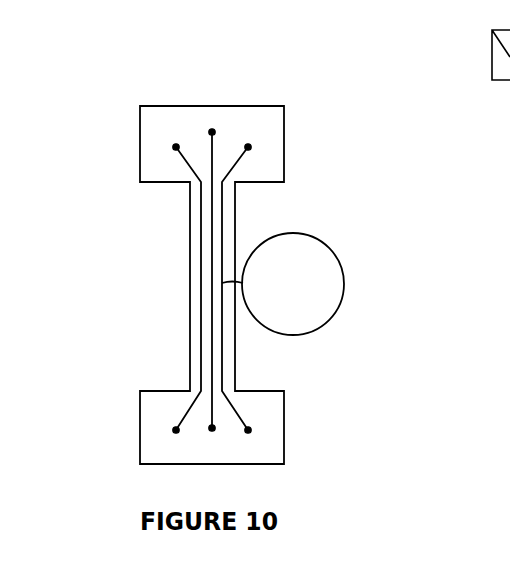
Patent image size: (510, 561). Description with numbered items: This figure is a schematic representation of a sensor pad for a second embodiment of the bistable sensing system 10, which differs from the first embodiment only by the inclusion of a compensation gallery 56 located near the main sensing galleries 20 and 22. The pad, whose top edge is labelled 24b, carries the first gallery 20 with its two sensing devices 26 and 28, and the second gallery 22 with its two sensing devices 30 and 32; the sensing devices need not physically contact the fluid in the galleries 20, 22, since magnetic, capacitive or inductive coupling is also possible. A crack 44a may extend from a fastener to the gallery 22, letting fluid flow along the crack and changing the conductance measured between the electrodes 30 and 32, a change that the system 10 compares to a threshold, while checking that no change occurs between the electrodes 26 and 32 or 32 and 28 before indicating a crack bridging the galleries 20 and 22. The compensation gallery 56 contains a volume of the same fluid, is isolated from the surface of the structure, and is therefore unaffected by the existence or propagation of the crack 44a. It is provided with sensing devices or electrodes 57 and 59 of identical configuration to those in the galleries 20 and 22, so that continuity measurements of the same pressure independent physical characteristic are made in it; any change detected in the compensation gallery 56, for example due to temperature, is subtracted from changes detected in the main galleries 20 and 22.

The bistable sensing system 10 is at (185, 104).
The first gallery 20 is at (200, 228).
The gallery 22 is at (223, 212).
The top edge of substrate 24b is at (200, 107).
The sensing device 26 is at (175, 146).
The sensing device 28 is at (175, 429).
The sensing device 30 is at (249, 146).
The sensing device 32 is at (249, 430).
The crack 44a is at (225, 283).
The compensation gallery 56 is at (211, 247).
The sensing device/electrode 57 is at (213, 130).
The sensing device/electrode 59 is at (212, 427).